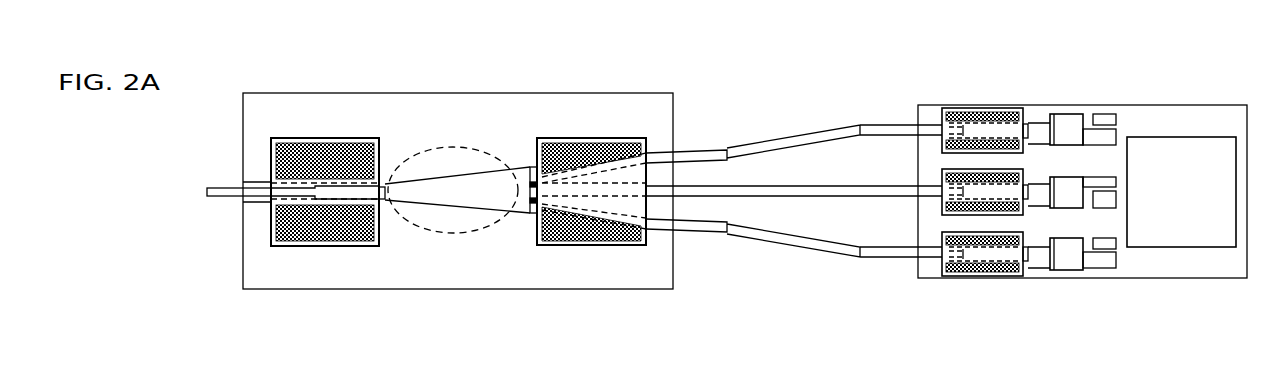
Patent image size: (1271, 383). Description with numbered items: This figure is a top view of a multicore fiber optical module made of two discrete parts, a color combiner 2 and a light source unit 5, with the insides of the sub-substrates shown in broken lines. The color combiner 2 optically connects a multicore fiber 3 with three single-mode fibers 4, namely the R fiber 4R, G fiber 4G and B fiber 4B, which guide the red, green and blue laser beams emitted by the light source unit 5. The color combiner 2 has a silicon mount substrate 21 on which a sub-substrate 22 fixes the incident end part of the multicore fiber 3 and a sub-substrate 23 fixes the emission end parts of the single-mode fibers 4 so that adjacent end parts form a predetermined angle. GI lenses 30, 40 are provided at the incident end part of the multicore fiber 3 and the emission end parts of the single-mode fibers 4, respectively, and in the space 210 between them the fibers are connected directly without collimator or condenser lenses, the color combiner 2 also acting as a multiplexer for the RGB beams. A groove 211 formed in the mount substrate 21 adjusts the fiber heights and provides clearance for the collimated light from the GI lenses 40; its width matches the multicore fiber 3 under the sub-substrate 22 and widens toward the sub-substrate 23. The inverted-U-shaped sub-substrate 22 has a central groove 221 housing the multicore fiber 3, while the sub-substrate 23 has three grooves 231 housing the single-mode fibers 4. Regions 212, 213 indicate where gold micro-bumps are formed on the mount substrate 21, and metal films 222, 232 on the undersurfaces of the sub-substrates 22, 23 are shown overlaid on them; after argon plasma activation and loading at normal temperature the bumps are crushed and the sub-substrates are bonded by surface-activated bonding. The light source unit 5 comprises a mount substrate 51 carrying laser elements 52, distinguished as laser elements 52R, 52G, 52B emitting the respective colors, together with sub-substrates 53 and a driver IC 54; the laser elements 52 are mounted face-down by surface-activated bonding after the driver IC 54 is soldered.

The color combiner 2 is at (683, 81).
The multicore fiber 3 is at (235, 197).
The single-mode fibers 4 is at (794, 248).
The B fiber 4B is at (740, 232).
The G fiber 4G is at (792, 193).
The R fiber 4R is at (842, 133).
The light source unit 5 is at (909, 86).
The mount substrate 21 is at (255, 139).
The sub-substrate 22 is at (322, 205).
The sub-substrate 23 is at (583, 205).
The GI lens 30 is at (357, 187).
The GI lens 40 is at (533, 167).
The mount substrate 51 is at (1223, 275).
The laser elements 52 is at (1088, 243).
The laser element 52B is at (1060, 281).
The laser element 52G is at (1077, 197).
The laser element 52R is at (1072, 135).
The sub-substrates 53 is at (1024, 110).
The driver IC 54 is at (1172, 147).
The space 210 is at (450, 147).
The groove 211 is at (452, 195).
The region where micro-bumps are formed 212 is at (352, 227).
The region where micro-bumps are formed 213 is at (558, 230).
The groove 221 is at (292, 197).
The metal film 222 is at (325, 272).
The grooves 231 is at (616, 230).
The metal film 232 is at (583, 257).